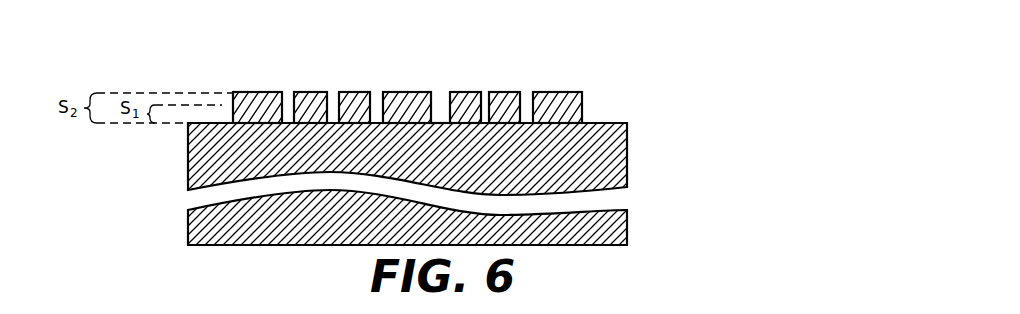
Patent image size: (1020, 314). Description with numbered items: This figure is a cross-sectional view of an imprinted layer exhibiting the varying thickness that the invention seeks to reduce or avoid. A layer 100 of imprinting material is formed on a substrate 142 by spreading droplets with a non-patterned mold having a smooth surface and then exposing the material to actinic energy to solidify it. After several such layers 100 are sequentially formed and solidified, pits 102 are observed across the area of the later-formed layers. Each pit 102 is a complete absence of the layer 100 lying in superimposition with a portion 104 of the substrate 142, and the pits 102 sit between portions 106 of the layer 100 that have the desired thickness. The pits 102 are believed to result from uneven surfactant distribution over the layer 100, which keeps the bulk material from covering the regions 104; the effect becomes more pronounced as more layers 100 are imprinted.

The layer 100 is at (582, 107).
The pits 102 is at (487, 92).
The portions of substrate 104 is at (442, 122).
The portions of layer 106 is at (505, 92).
The substrate 142 is at (618, 160).